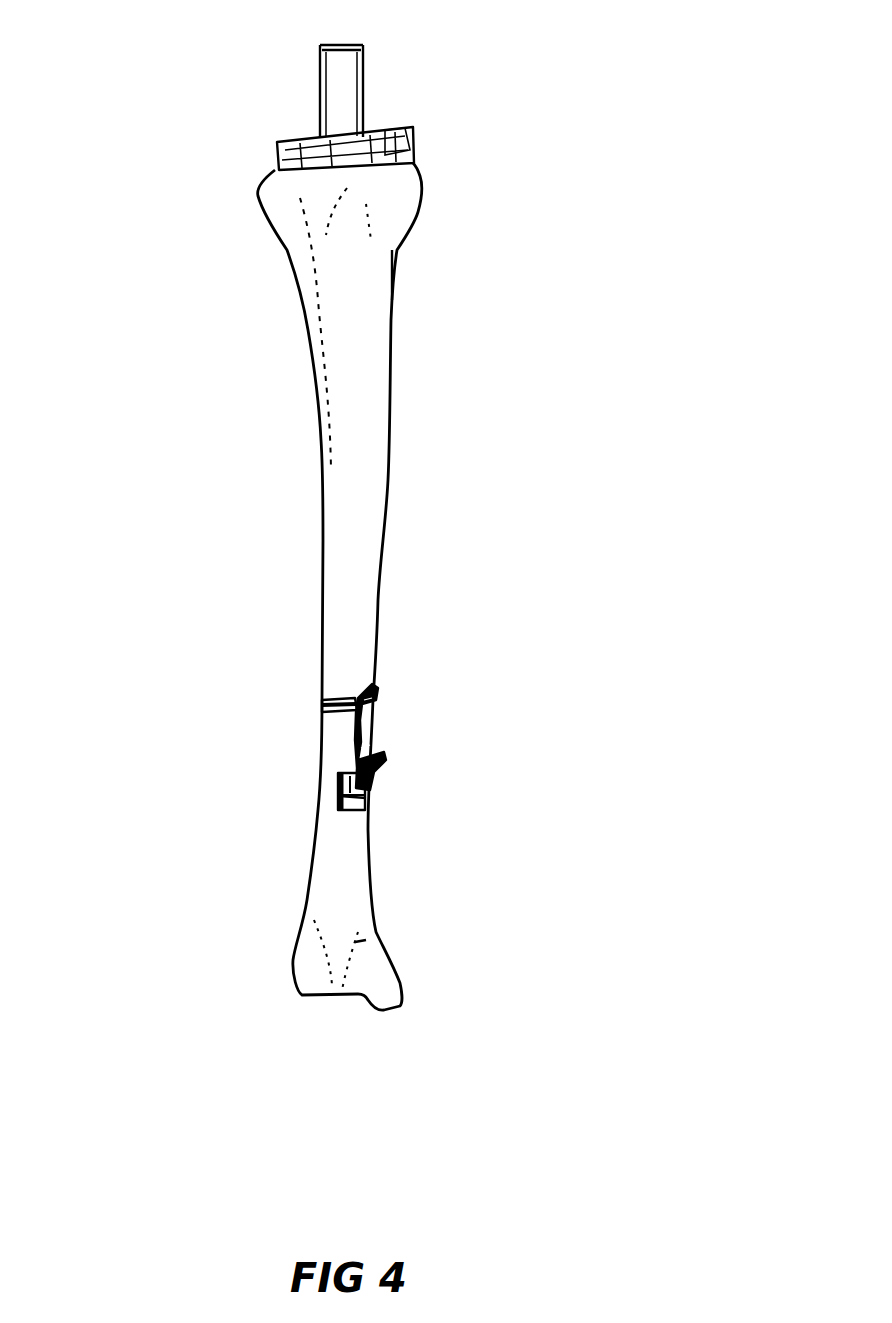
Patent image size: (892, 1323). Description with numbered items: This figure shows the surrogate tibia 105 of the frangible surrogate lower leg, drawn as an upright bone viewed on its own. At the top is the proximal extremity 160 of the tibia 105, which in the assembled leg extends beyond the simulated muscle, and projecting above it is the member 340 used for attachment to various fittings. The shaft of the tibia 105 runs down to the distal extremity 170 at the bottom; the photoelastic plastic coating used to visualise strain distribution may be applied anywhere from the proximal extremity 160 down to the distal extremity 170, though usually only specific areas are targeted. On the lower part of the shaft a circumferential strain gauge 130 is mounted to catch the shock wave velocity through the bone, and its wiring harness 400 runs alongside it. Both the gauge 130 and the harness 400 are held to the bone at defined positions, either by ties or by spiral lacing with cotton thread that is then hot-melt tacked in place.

The tibia 105 is at (276, 381).
The proximal extremity 160 is at (282, 195).
The member 340 is at (345, 80).
The distal extremity 170 is at (353, 280).
The wiring harness 400 is at (380, 728).
The circumferential strain gauge 130 is at (366, 800).